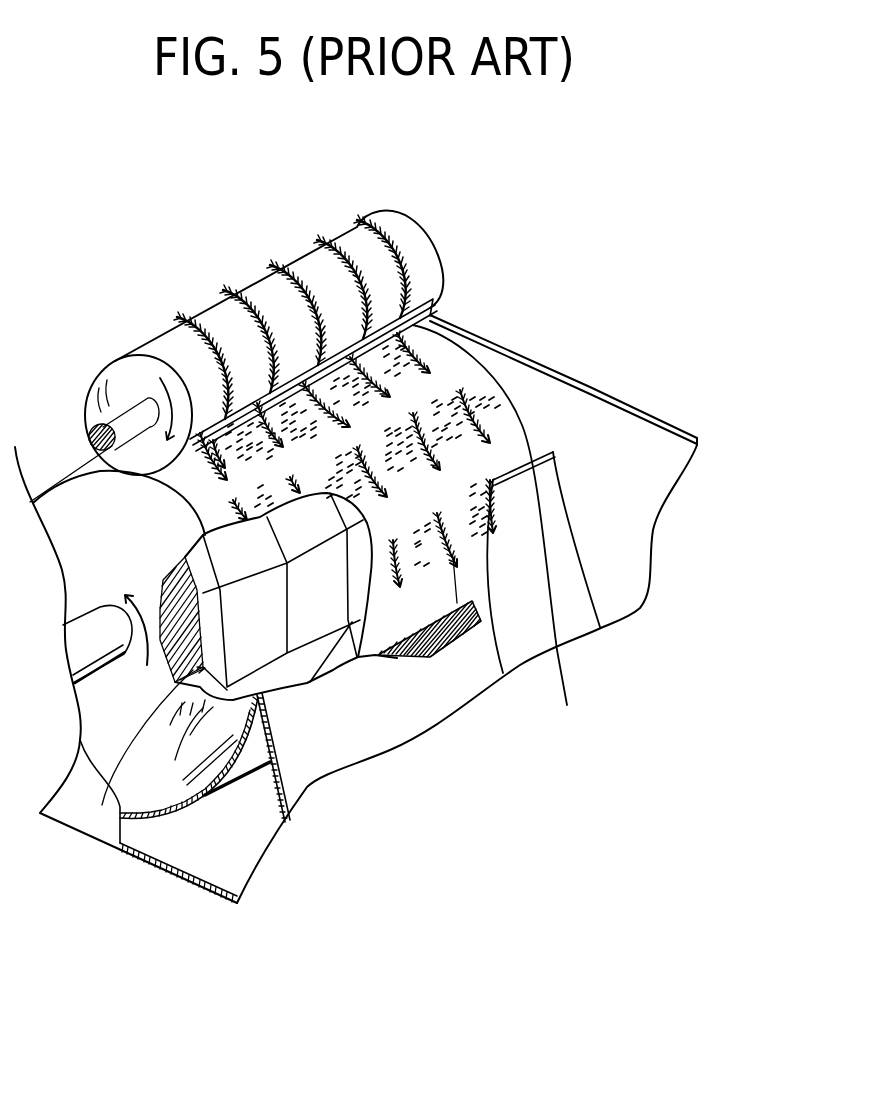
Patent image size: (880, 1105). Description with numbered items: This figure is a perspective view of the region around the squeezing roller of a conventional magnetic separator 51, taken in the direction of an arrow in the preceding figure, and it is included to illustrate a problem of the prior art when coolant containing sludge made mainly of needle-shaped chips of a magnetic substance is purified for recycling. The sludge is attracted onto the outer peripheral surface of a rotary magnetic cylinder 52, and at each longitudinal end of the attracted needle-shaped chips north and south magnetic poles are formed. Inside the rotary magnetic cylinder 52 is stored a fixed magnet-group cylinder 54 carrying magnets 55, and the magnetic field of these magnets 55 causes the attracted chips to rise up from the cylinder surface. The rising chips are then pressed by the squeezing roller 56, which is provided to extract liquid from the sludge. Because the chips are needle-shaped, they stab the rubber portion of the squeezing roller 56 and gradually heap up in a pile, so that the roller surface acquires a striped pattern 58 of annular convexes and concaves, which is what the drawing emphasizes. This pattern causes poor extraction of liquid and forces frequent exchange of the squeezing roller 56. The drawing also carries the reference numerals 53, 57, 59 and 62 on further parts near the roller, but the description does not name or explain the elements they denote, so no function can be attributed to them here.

The conventional magnetic separator 51 is at (562, 375).
The rotary magnetic cylinder 52 is at (480, 362).
The chute 53 is at (567, 705).
The fixed magnet-group cylinder 54 is at (103, 807).
The magnets 55 is at (257, 650).
The squeezing roller 56 is at (347, 247).
The sealing strip 57 is at (503, 673).
The striped pattern 58 is at (182, 310).
The curved guide plate 59 is at (195, 818).
The dust particles 62 is at (430, 567).